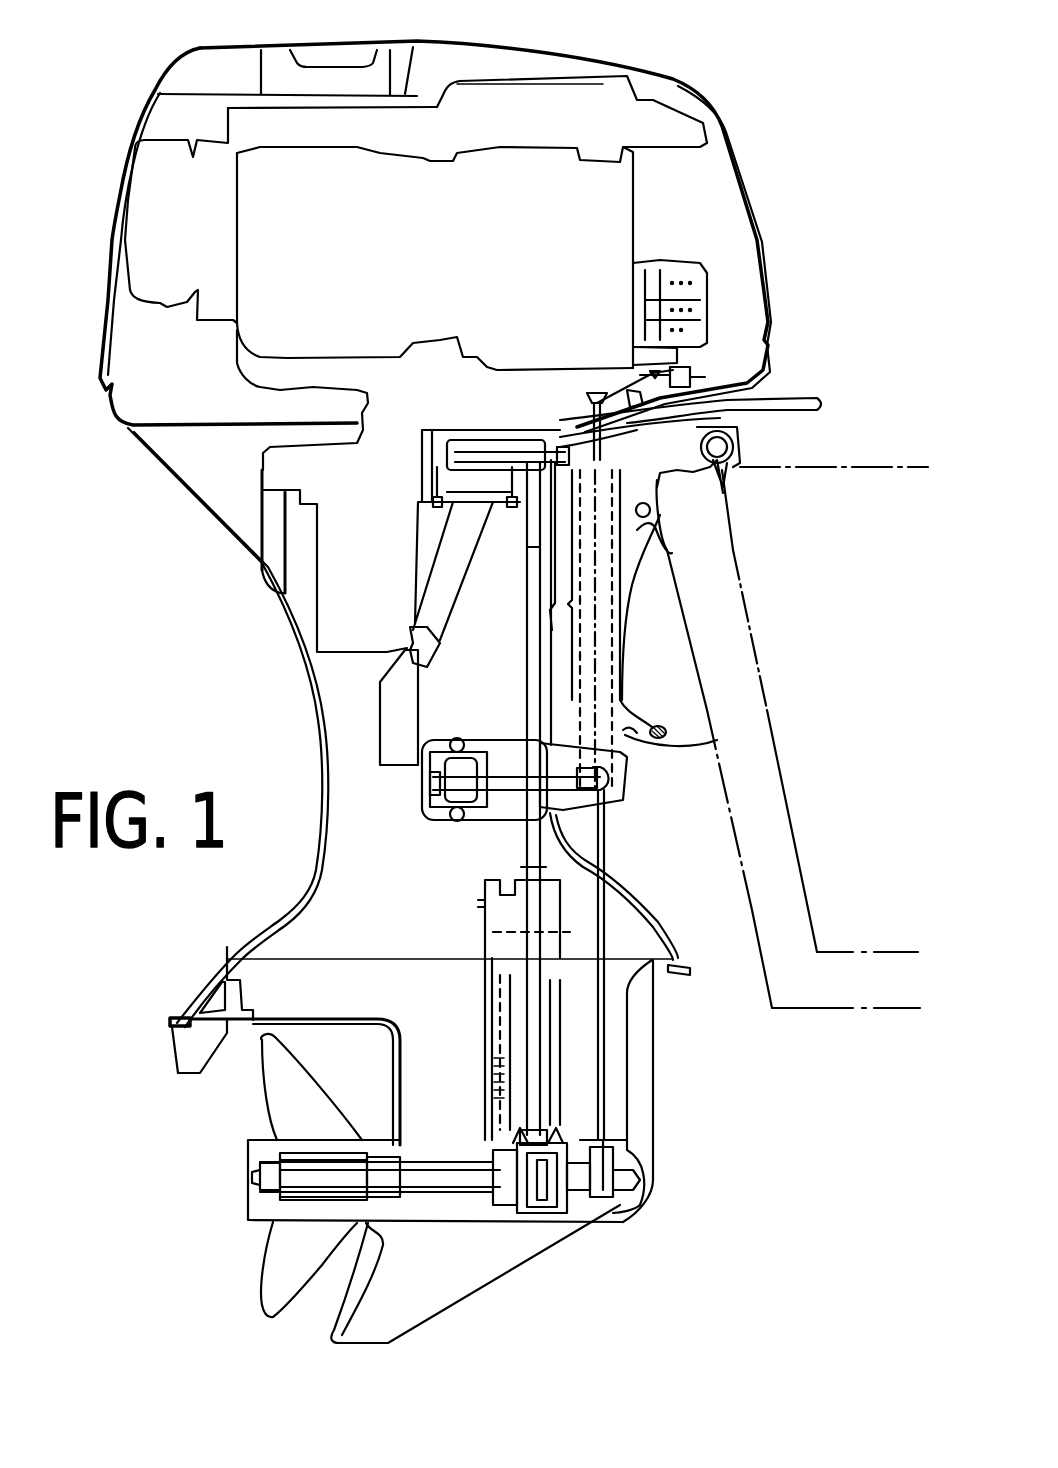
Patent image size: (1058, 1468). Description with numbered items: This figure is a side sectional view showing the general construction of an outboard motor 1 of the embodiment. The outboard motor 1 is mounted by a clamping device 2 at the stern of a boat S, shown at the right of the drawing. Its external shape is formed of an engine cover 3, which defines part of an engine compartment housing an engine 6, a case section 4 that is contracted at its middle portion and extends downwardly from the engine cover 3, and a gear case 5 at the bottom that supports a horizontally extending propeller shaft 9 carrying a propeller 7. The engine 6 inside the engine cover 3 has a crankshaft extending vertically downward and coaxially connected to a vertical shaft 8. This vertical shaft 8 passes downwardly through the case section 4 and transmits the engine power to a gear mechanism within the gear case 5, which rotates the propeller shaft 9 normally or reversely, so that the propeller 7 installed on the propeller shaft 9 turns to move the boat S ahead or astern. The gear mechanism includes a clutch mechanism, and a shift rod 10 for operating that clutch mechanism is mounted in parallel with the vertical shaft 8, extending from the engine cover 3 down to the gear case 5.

The outboard motor 1 is at (92, 95).
The clamping device 2 is at (672, 553).
The engine cover 3 is at (104, 268).
The case section 4 is at (307, 708).
The gear case 5 is at (653, 1058).
The engine 6 is at (470, 100).
The propeller 7 is at (262, 1264).
The vertical shaft 8 is at (521, 682).
The propeller shaft 9 is at (432, 1180).
The shift rod 10 is at (600, 829).
The boat S is at (857, 467).